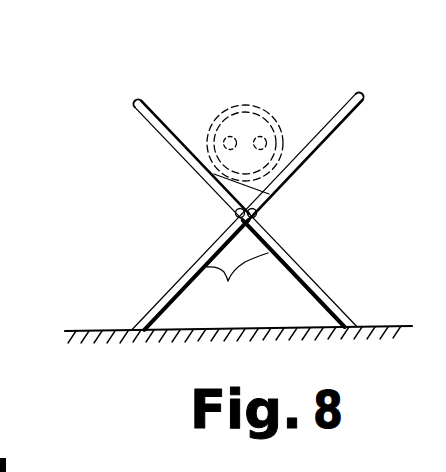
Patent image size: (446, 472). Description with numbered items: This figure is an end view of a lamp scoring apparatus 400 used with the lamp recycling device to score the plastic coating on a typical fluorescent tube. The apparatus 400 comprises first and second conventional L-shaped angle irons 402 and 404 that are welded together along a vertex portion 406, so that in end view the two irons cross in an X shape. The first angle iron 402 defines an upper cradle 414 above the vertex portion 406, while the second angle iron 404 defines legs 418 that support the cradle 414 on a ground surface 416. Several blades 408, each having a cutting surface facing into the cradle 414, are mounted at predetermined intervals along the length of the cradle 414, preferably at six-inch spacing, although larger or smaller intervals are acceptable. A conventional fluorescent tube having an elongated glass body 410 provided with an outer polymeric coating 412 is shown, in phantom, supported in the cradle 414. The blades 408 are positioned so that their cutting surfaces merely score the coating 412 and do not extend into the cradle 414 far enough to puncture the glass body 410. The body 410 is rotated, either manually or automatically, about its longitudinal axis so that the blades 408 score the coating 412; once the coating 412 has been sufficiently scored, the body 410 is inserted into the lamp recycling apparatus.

The lamp scoring apparatus 400 is at (140, 169).
The first angle iron 402 is at (335, 301).
The second angle iron 404 is at (342, 122).
The vertex portion 406 is at (258, 213).
The blades 408 is at (230, 184).
The glass body 410 is at (240, 110).
The outer polymeric coating 412 is at (272, 126).
The upper cradle 414 is at (199, 121).
The ground surface 416 is at (127, 329).
The legs 418 is at (237, 282).